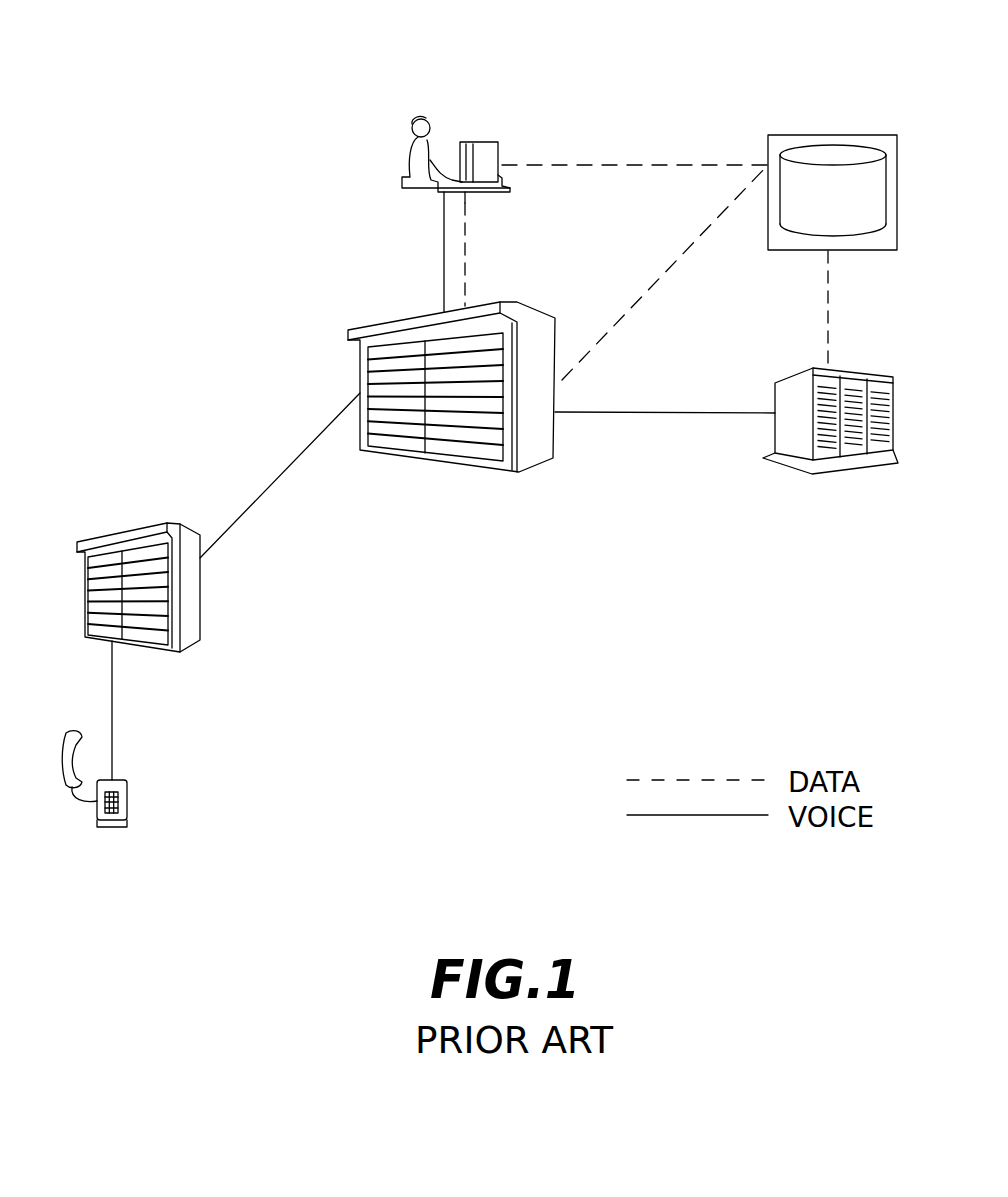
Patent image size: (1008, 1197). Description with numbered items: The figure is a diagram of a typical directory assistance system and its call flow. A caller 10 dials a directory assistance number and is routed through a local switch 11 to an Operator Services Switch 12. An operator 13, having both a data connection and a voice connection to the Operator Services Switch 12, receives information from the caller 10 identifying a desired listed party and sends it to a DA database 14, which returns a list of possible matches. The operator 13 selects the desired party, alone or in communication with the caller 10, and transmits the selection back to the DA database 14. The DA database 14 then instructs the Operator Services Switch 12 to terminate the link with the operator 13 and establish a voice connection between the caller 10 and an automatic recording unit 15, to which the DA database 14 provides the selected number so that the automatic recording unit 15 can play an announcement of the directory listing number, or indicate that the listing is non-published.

The caller 10 is at (122, 827).
The local switch 11 is at (202, 600).
The Operator Services Switch 12 is at (475, 472).
The operator 13 is at (475, 142).
The DA database 14 is at (832, 135).
The automatic recording unit (ARU) 15 is at (875, 463).